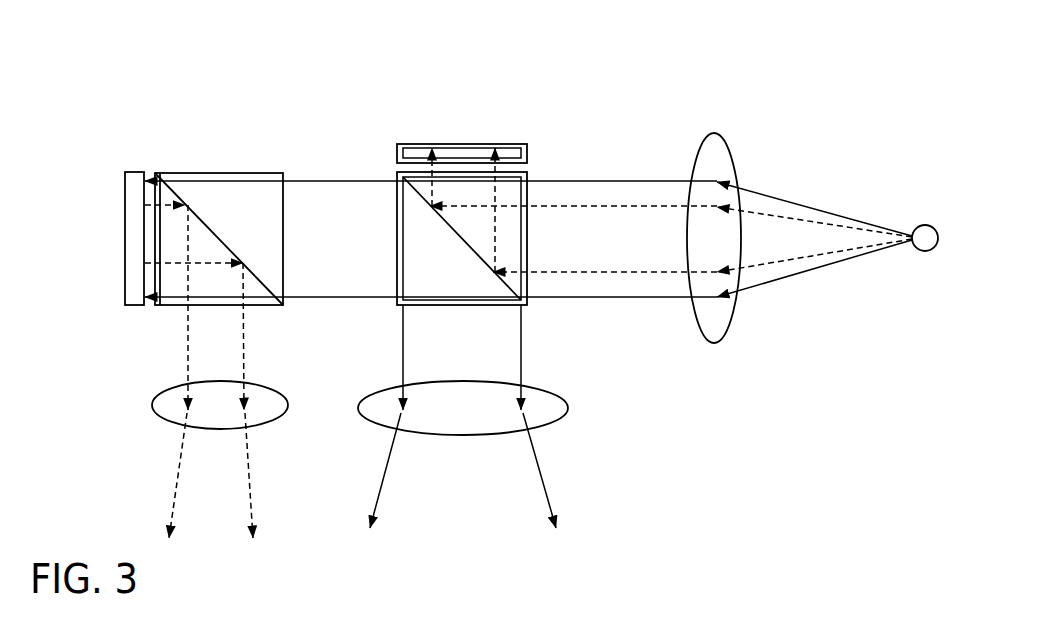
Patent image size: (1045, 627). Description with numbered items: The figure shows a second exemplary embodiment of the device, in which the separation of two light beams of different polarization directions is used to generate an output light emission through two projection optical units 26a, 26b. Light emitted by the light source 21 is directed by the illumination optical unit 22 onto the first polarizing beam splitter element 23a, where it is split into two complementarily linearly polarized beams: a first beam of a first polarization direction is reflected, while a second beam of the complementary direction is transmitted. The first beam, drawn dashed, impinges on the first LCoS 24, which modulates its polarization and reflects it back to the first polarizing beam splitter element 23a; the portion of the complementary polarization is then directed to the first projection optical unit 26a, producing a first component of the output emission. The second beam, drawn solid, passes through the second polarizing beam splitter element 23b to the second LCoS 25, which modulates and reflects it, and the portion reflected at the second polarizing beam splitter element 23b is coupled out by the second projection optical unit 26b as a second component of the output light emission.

The light source 21 is at (924, 224).
The illumination optical unit 22 is at (744, 160).
The first polarizing beam splitter element 23a is at (531, 168).
The second polarizing beam splitter element 23b is at (288, 175).
The first LCoS 24 is at (464, 142).
The second LCoS 25 is at (118, 227).
The first projection optical unit 26a is at (557, 426).
The second projection optical unit 26b is at (150, 397).